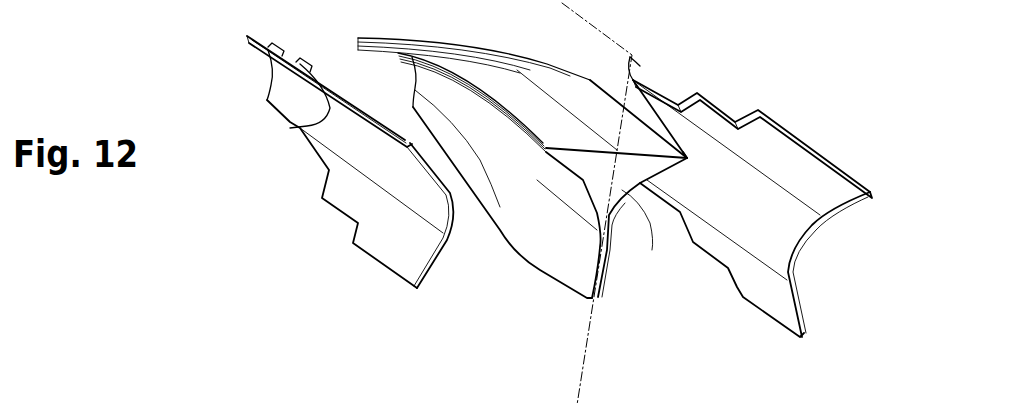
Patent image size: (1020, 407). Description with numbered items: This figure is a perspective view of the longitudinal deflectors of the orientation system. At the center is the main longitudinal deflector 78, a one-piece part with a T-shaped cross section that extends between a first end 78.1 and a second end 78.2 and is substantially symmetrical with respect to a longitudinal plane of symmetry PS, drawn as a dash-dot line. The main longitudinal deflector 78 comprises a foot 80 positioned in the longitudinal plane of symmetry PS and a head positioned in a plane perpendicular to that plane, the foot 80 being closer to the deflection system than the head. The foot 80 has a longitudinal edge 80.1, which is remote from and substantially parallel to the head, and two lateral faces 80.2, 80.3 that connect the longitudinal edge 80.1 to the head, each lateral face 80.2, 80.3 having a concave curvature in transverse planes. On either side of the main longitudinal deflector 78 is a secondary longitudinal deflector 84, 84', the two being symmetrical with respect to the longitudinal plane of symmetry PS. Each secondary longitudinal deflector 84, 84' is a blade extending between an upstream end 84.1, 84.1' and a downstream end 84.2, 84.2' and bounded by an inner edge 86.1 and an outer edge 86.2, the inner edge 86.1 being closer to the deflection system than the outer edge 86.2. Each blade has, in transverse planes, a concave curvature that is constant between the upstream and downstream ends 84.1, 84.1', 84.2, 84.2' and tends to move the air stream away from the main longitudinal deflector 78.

The main longitudinal deflector 78 is at (491, 202).
The first end 78.1 is at (628, 182).
The second end 78.2 is at (412, 87).
The foot 80 is at (498, 253).
The longitudinal edge 80.1 is at (498, 253).
The lateral face 80.2 is at (520, 203).
The lateral face 80.3 is at (610, 207).
The secondary longitudinal deflector 84 is at (749, 215).
The secondary longitudinal deflector 84' is at (307, 185).
The upstream end 84.1 is at (829, 285).
The upstream end 84.1' is at (383, 232).
The downstream end 84.2 is at (677, 67).
The downstream end 84.2' is at (246, 89).
The inner edge 86.1 is at (330, 205).
The outer edge 86.2 is at (333, 118).
The longitudinal plane of symmetry PS is at (610, 57).